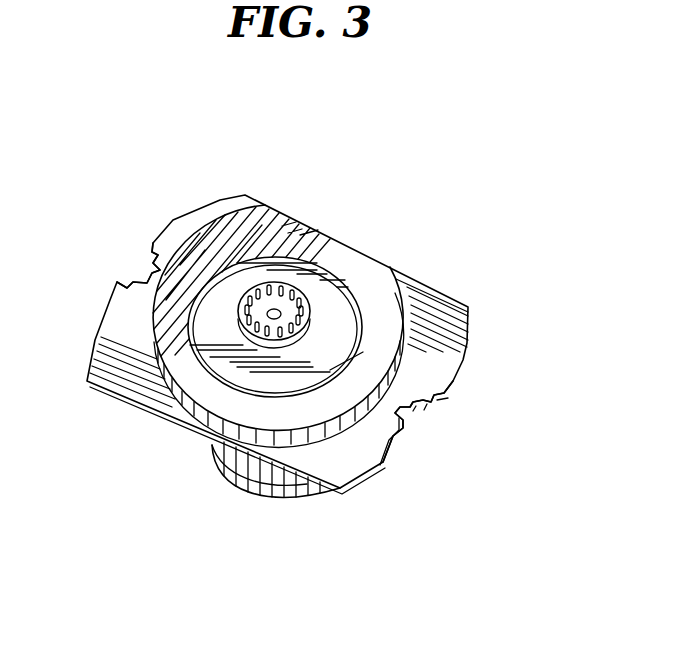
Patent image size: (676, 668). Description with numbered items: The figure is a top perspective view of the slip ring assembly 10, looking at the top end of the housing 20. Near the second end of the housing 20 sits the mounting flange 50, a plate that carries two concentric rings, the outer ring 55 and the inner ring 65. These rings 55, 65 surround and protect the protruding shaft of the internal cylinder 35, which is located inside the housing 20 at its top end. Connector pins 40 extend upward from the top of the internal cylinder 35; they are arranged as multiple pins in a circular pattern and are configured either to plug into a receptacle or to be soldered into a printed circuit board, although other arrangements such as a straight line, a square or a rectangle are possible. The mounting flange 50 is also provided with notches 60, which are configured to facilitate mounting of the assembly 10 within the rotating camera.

The assembly 10 is at (480, 496).
The housing 20 is at (250, 497).
The internal cylinder 35 is at (305, 334).
The connector pins 40 is at (262, 343).
The mounting flange 50 is at (443, 313).
The outer ring 55 is at (165, 323).
The notches 60 is at (148, 273).
The inner ring 65 is at (300, 360).